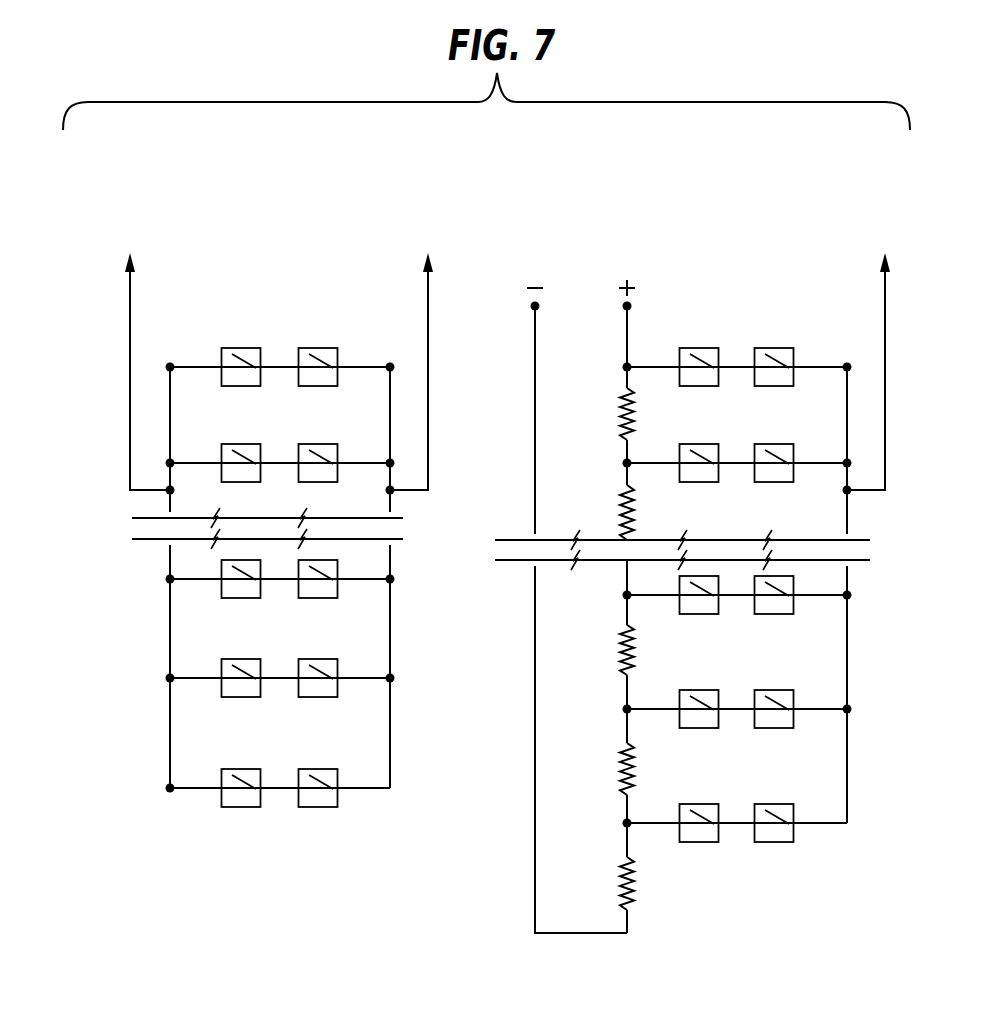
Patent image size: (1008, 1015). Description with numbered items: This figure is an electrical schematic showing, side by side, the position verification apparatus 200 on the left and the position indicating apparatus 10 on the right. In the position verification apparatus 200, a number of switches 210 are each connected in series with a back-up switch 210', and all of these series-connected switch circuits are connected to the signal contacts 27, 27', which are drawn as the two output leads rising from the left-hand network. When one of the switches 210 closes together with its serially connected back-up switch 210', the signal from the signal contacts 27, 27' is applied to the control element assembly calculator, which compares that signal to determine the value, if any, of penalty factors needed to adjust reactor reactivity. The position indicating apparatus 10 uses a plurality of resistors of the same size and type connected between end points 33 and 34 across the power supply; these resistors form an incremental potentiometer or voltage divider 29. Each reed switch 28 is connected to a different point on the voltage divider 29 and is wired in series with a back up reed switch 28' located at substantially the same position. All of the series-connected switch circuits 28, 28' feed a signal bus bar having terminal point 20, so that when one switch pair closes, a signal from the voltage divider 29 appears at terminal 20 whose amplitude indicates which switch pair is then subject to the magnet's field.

The position verification apparatus 200 is at (279, 192).
The position indicating apparatus 10 is at (732, 948).
The signal contact 27 is at (143, 354).
The signal contact 27' is at (417, 354).
The switch 210 is at (241, 579).
The back-up switch 210' is at (320, 579).
The reed switch 28 is at (737, 596).
The back up reed switch 28' is at (736, 596).
The bus bar terminal 20 is at (871, 353).
The end point 33 is at (535, 356).
The end point 34 is at (627, 339).
The voltage divider 29 is at (572, 683).